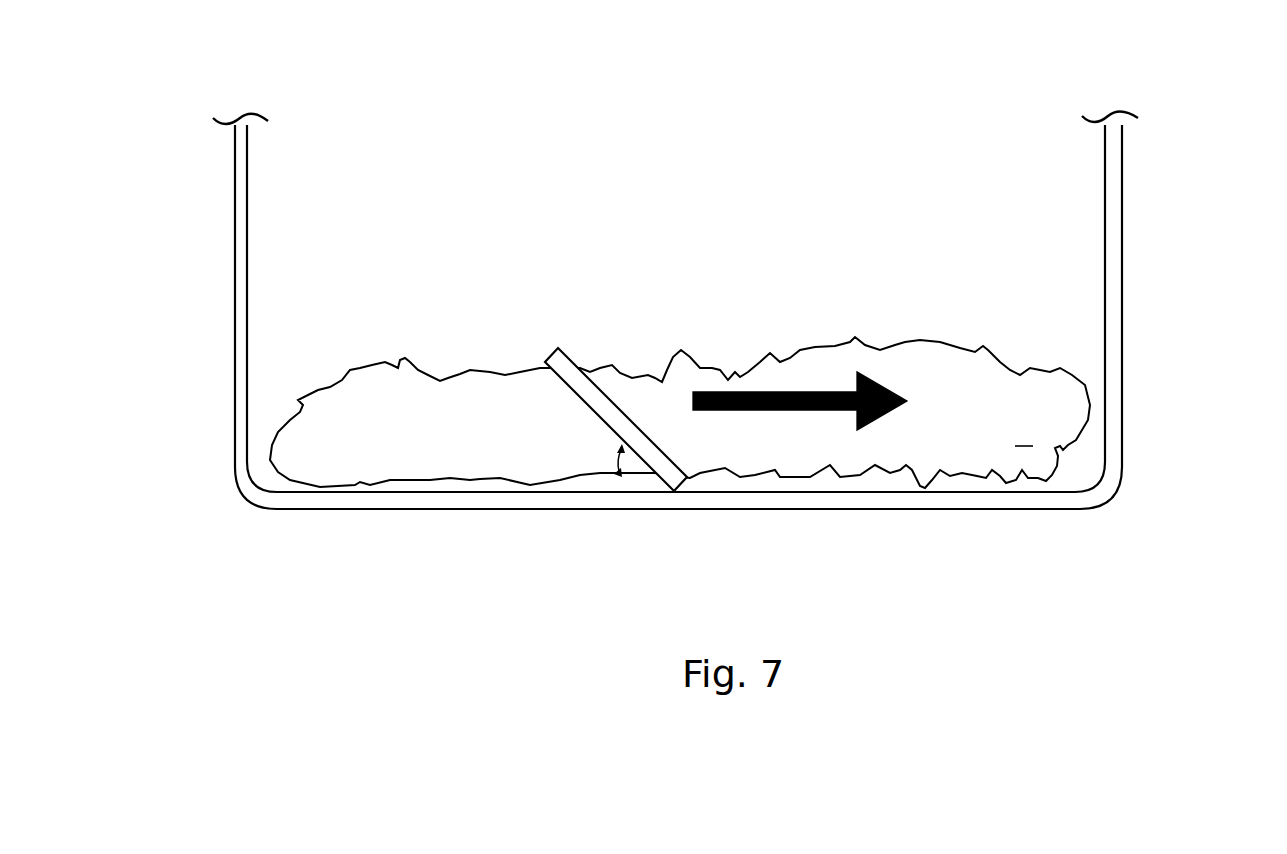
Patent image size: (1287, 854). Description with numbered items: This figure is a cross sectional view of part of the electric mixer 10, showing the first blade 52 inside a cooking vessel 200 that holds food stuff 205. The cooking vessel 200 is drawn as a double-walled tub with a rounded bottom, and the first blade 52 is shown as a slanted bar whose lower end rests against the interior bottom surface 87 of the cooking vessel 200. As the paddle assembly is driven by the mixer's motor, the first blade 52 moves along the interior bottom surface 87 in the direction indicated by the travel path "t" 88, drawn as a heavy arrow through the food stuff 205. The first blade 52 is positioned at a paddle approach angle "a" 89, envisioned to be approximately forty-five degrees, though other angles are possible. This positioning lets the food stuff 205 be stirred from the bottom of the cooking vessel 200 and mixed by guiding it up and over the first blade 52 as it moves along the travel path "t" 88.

The electric mixer 10 is at (254, 563).
The first blade 52 is at (546, 356).
The interior bottom surface 87 is at (416, 485).
The travel path "t" 88 is at (805, 388).
The paddle approach angle "a" 89 is at (587, 453).
The cooking vessel 200 is at (1122, 315).
The food stuff 205 is at (1025, 447).